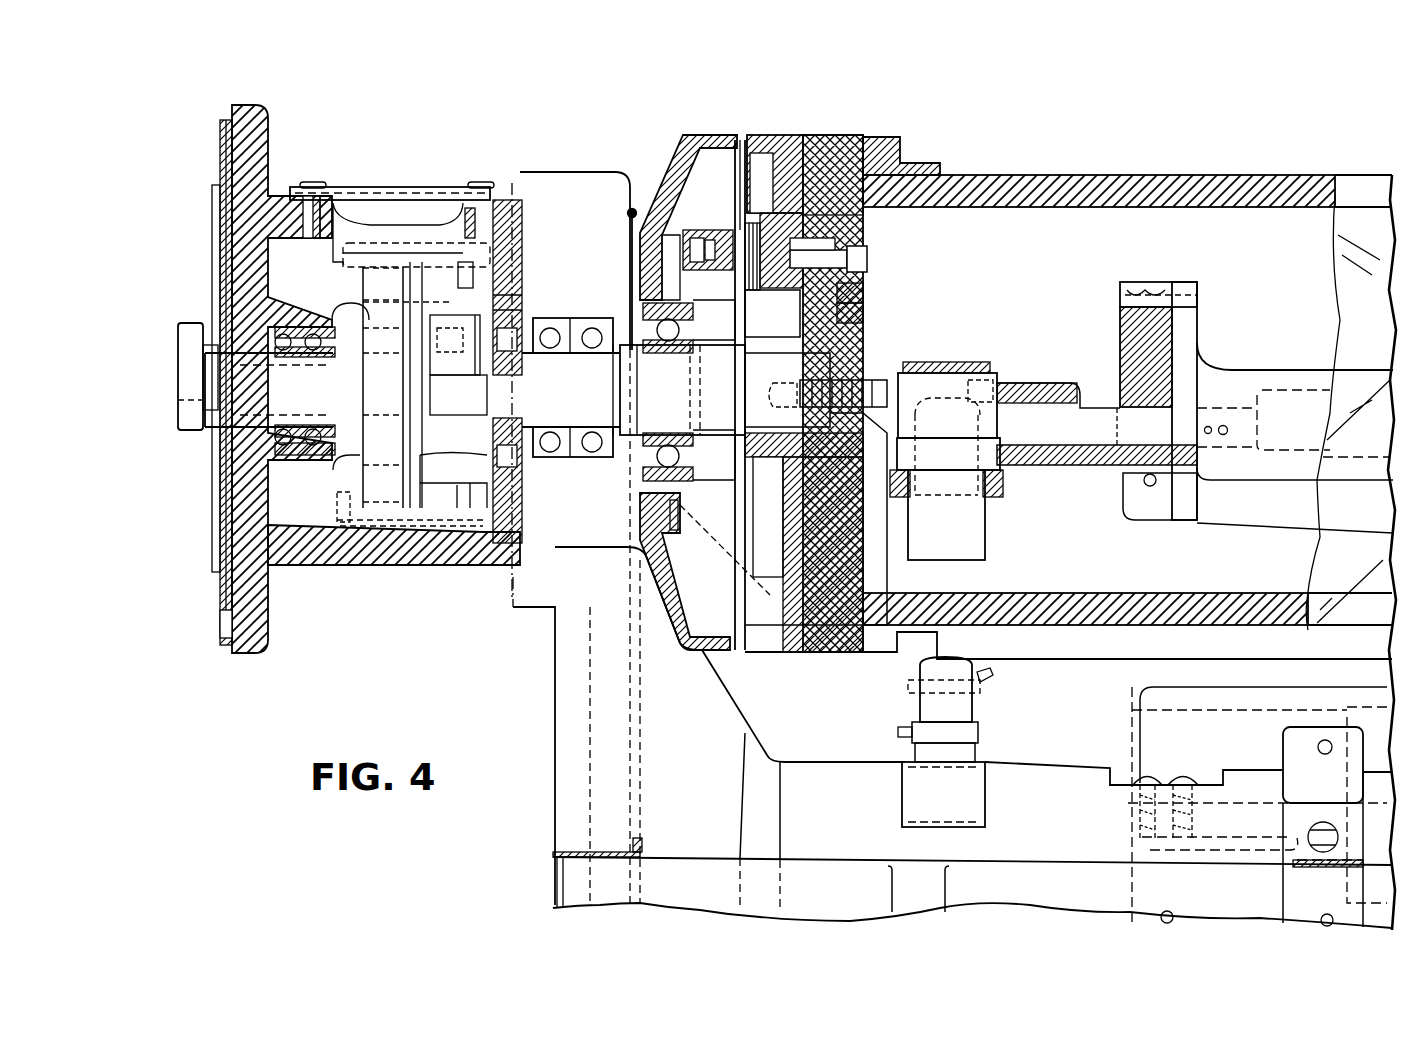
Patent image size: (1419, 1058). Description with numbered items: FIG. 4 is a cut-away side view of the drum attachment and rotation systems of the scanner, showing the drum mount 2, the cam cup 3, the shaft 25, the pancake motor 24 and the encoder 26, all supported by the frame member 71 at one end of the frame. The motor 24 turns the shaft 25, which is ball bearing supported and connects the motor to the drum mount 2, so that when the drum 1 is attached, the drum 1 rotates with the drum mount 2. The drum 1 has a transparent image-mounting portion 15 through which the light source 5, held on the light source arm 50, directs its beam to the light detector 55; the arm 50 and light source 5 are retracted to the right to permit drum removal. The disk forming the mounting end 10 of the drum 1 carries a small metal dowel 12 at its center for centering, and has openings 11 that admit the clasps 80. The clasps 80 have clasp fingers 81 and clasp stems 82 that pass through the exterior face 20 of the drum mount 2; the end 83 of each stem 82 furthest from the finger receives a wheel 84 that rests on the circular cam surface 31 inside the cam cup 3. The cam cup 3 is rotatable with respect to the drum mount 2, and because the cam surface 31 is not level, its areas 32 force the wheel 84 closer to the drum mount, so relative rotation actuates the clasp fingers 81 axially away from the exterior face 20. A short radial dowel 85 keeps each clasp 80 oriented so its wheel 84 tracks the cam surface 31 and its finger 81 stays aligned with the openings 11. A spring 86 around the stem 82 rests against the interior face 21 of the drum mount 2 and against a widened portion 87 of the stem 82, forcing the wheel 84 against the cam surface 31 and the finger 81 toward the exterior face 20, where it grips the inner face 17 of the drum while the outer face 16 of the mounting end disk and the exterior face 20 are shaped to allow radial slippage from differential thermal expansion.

The drum 1 is at (1185, 148).
The drum mount 2 is at (790, 170).
The cam cup 3 is at (680, 170).
The light source 5 is at (985, 530).
The mounting end 10 is at (818, 170).
The openings 11 is at (833, 175).
The dowel 12 is at (887, 394).
The image-mounting portion 15 is at (1255, 178).
The outer face 16 is at (773, 652).
The inner face 17 is at (865, 568).
The exterior face 20 is at (818, 652).
The interior face 21 is at (800, 593).
The pancake motor 24 is at (199, 160).
The shaft 25 is at (345, 440).
The encoder 26 is at (416, 195).
The cam surface 31 is at (665, 205).
The areas 32 is at (680, 540).
The light source arm 50 is at (1270, 370).
The light detector 55 is at (985, 714).
The frame member 71 is at (555, 640).
The clasp 80 is at (882, 258).
The clasp finger 81 is at (868, 243).
The clasp stem 82 is at (852, 290).
The end of the clasp stem 83 is at (736, 170).
The wheel 84 is at (713, 240).
The radial dowel 85 is at (850, 320).
The spring 86 is at (760, 170).
The widened portion 87 is at (718, 300).